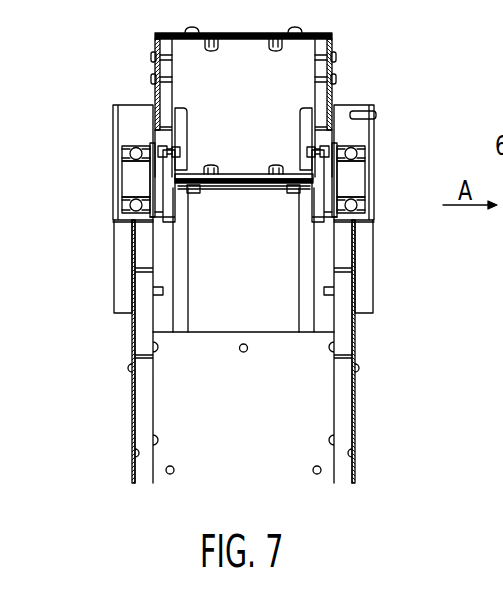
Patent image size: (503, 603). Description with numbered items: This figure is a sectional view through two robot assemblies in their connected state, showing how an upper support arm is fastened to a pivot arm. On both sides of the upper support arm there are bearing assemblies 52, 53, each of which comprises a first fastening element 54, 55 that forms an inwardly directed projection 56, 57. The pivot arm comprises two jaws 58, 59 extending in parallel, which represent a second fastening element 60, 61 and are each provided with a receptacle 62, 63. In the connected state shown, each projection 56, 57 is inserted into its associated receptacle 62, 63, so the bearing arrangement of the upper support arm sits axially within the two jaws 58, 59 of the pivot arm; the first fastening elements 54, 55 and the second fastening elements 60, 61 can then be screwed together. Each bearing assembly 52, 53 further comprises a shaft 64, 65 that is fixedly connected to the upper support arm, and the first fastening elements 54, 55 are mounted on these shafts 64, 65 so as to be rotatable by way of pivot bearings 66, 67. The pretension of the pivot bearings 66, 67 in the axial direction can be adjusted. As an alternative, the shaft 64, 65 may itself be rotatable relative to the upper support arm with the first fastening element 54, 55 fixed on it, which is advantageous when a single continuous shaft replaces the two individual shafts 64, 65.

The bearing assembly 52 is at (86, 172).
The bearing assembly 53 is at (401, 172).
The first fastening element 54 is at (122, 257).
The first fastening element 55 is at (365, 257).
The projection 56 is at (115, 218).
The projection 57 is at (372, 218).
The jaw 58 is at (90, 351).
The jaw 59 is at (395, 351).
The second fastening element 60 is at (140, 413).
The second fastening element 61 is at (347, 413).
The receptacle 62 is at (145, 220).
The receptacle 63 is at (342, 220).
The shaft 64 is at (137, 182).
The shaft 65 is at (350, 182).
The pivot bearing 66 is at (133, 153).
The pivot bearing 67 is at (354, 153).